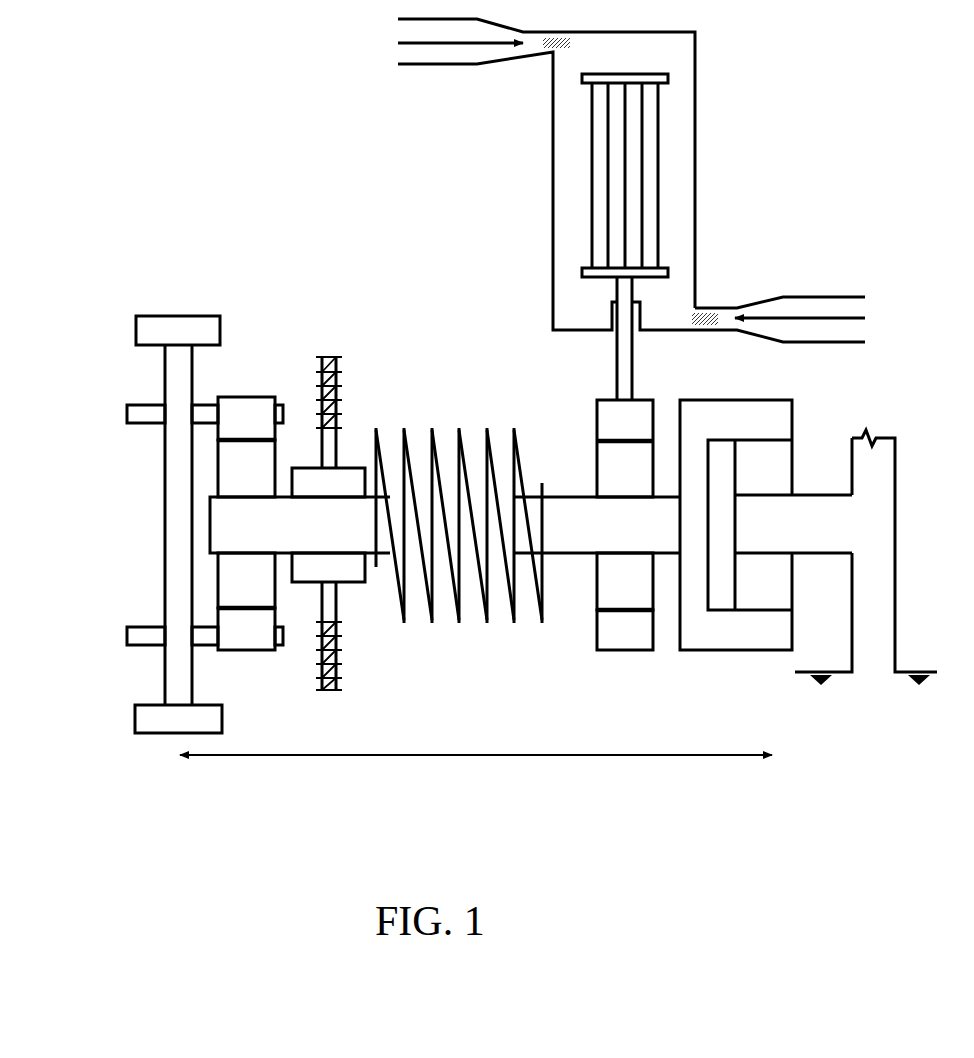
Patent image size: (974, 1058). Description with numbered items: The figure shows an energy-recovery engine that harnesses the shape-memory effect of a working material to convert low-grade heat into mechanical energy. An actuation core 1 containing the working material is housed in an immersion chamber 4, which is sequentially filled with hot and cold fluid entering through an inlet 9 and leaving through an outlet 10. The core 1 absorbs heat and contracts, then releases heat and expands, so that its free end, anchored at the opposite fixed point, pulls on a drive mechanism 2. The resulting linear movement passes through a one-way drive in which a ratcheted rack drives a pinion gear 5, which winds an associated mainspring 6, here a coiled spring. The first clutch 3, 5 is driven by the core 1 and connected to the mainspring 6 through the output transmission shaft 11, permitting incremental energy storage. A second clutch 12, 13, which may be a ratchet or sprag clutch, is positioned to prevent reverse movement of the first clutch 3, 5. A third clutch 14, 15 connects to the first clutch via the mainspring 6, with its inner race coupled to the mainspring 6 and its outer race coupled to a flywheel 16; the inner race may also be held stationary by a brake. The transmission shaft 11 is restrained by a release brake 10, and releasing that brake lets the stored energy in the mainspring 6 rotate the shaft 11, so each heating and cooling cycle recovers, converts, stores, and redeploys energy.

The actuation core 1 is at (653, 178).
The drive mechanism 2 is at (476, 776).
The first clutch 3 is at (638, 643).
The immersion chamber 4 is at (572, 128).
The pinion gear 5 is at (612, 592).
The mainspring 6 is at (455, 422).
The inlet 9 is at (380, 45).
The outlet 10 is at (872, 317).
The output transmission shaft 11 is at (233, 533).
The second clutch 12 is at (753, 637).
The second clutch 13 is at (780, 463).
The third clutch 14 is at (252, 415).
The third clutch 15 is at (240, 478).
The flywheel 16 is at (155, 333).